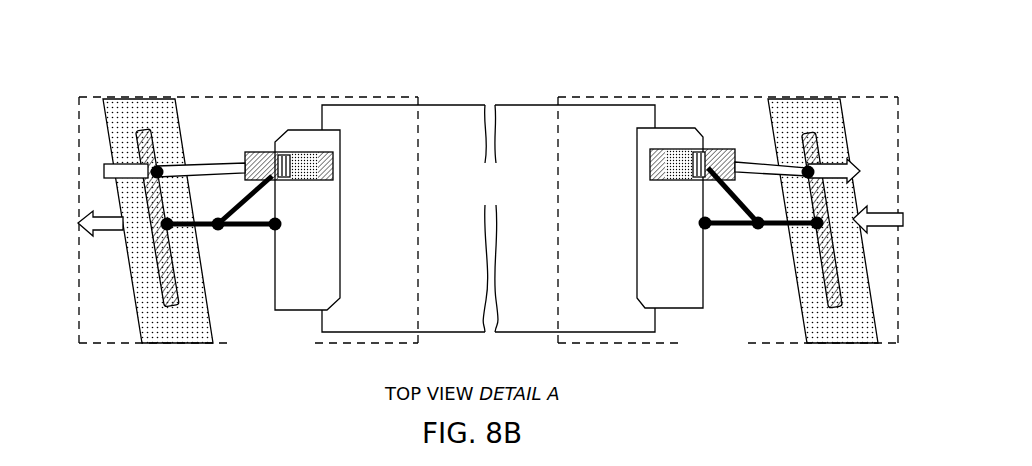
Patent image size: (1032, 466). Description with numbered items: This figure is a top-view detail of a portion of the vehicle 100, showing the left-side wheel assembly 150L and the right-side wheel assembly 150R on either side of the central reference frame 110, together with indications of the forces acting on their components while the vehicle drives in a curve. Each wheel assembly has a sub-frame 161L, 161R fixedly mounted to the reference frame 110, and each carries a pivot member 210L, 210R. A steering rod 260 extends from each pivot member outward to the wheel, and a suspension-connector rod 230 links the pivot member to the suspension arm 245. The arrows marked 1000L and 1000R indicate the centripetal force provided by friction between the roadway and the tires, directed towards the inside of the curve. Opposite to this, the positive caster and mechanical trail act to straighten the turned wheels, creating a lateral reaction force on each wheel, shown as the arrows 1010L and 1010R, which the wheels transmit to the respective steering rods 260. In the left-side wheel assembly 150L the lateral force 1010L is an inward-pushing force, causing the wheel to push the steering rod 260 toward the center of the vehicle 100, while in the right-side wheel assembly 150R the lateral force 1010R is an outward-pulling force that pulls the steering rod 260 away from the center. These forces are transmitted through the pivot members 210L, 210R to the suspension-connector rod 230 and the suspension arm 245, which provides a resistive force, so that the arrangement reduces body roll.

The vehicle 100 is at (337, 42).
The reference frame 110 is at (511, 197).
The left-side wheel assembly 150L is at (200, 230).
The right-side wheel assembly 150R is at (785, 230).
The left sub-frame 161L is at (333, 280).
The right sub-frame 161R is at (698, 280).
The left pivot member 210L is at (298, 146).
The right pivot member 210R is at (683, 146).
The suspension-connector rod 230 is at (731, 207).
The suspension arm 245 is at (774, 229).
The steering rod 260 is at (207, 161).
The left lateral force 1010L is at (103, 171).
The right lateral force 1010R is at (851, 179).
The left centripetal force 1000L is at (85, 238).
The right centripetal force 1000R is at (859, 224).